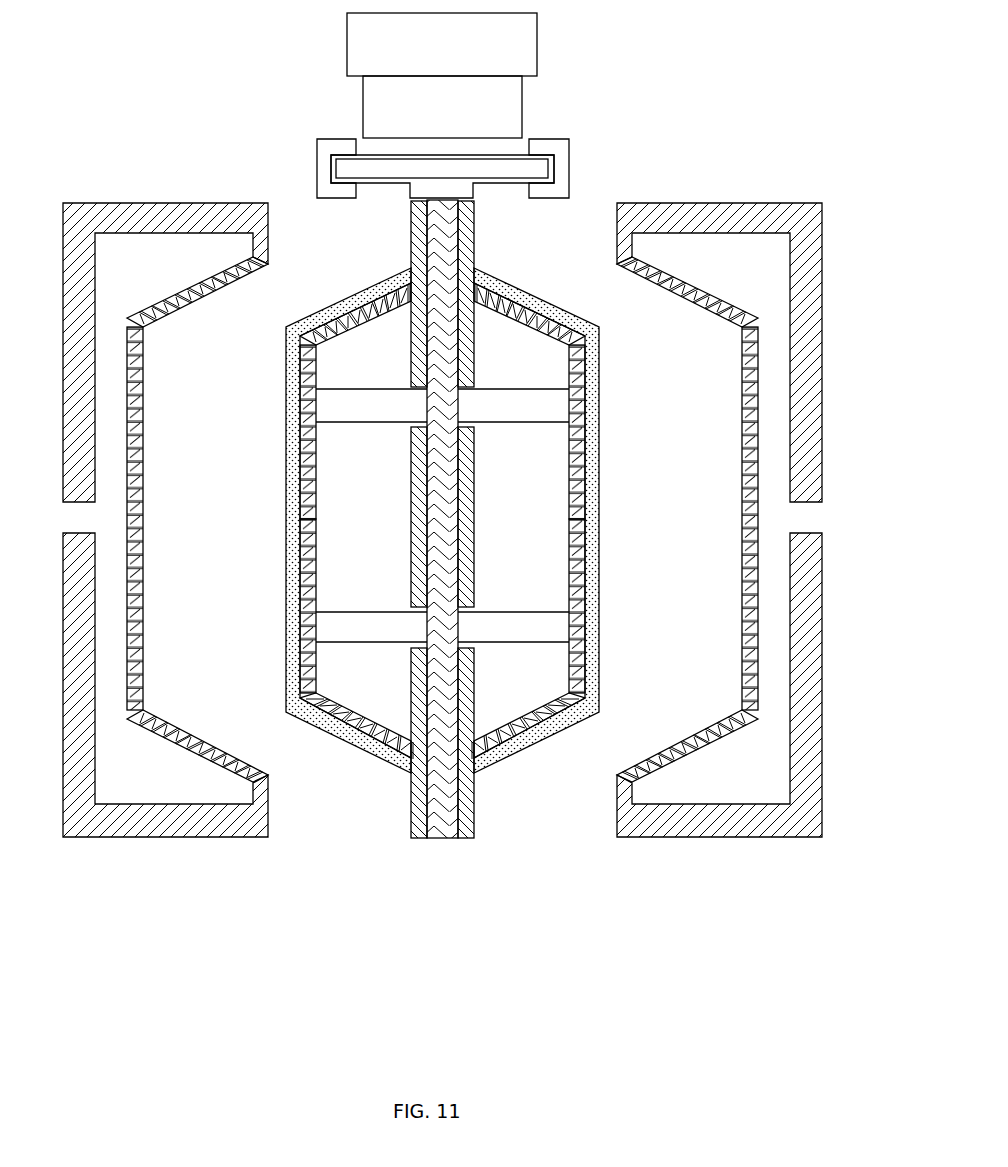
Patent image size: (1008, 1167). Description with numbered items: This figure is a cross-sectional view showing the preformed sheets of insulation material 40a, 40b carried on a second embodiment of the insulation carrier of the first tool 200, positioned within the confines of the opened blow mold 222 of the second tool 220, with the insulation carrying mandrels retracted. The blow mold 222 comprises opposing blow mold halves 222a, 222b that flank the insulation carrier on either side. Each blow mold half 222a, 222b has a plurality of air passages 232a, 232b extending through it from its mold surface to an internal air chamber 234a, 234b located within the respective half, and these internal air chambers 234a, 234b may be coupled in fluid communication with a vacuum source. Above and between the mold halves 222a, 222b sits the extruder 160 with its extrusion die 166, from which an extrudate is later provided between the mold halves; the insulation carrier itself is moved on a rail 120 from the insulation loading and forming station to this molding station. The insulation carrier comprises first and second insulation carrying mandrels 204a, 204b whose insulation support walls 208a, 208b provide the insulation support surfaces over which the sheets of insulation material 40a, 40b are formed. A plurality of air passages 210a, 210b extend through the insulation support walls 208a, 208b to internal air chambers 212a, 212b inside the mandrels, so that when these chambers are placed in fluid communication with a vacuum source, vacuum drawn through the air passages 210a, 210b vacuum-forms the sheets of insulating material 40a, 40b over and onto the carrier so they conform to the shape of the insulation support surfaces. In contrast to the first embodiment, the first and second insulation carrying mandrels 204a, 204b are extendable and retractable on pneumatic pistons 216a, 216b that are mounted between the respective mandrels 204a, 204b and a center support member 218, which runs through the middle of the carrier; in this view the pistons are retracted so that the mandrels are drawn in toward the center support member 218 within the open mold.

The extruder 160 is at (442, 44).
The extrusion die 166 is at (442, 107).
The rail 120 is at (312, 133).
The second tool 220 is at (648, 122).
The blow mold 222 is at (197, 153).
The first blow mold half 222a is at (159, 519).
The second blow mold half 222b is at (756, 495).
The first tool 200 is at (395, 848).
The first insulation carrying mandrel 204a is at (297, 550).
The second insulation carrying mandrel 204b is at (588, 549).
The first preformed sheet of insulation material 40a is at (308, 521).
The second preformed sheet of insulation material 40b is at (581, 521).
The center support member 218 is at (443, 255).
The first insulation support wall 208a is at (316, 365).
The second insulation support wall 208b is at (569, 370).
The first air passages 210a is at (316, 572).
The second air passages 210b is at (569, 573).
The first internal air chamber 212a is at (390, 527).
The second internal air chamber 212b is at (545, 527).
The first pneumatic piston 216a is at (412, 405).
The second pneumatic piston 216b is at (473, 405).
The first blow mold air passages 232a is at (193, 745).
The second blow mold air passages 232b is at (697, 752).
The first blow mold internal air chamber 234a is at (174, 793).
The second blow mold internal air chamber 234b is at (753, 785).